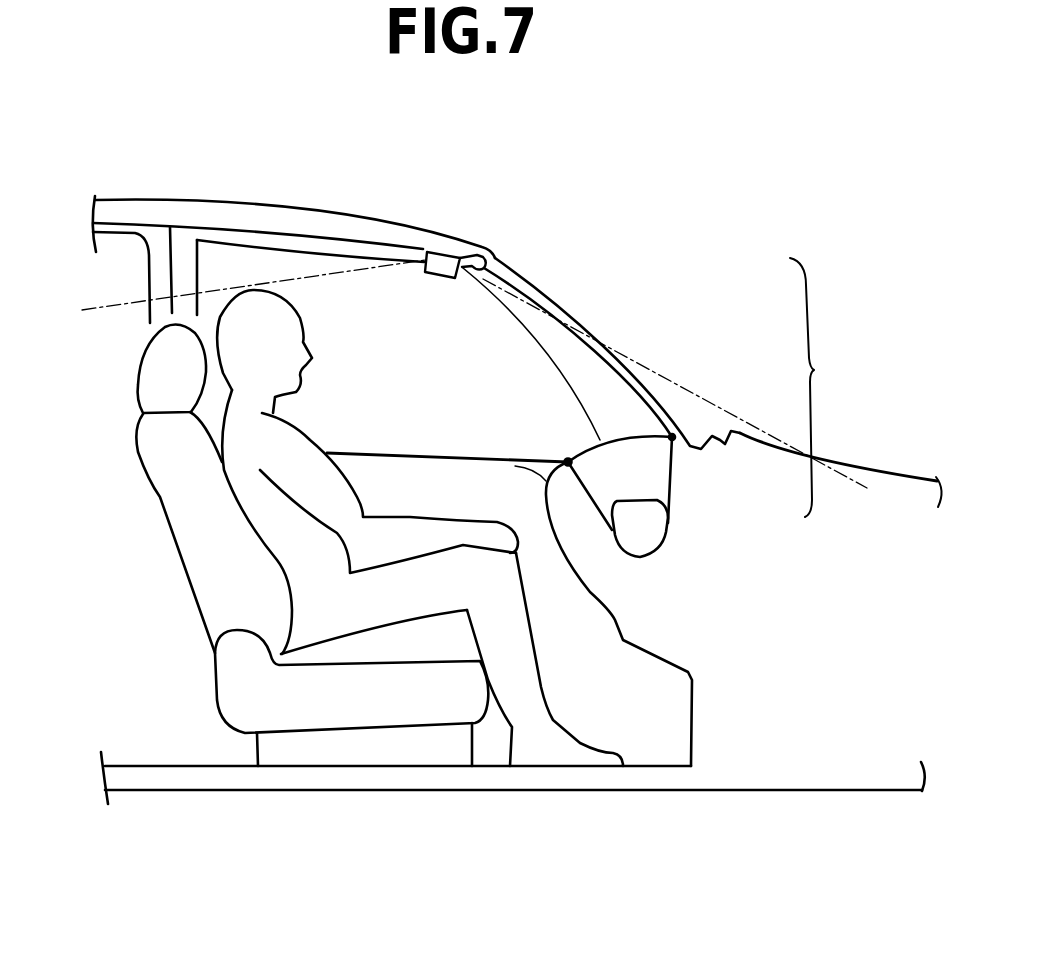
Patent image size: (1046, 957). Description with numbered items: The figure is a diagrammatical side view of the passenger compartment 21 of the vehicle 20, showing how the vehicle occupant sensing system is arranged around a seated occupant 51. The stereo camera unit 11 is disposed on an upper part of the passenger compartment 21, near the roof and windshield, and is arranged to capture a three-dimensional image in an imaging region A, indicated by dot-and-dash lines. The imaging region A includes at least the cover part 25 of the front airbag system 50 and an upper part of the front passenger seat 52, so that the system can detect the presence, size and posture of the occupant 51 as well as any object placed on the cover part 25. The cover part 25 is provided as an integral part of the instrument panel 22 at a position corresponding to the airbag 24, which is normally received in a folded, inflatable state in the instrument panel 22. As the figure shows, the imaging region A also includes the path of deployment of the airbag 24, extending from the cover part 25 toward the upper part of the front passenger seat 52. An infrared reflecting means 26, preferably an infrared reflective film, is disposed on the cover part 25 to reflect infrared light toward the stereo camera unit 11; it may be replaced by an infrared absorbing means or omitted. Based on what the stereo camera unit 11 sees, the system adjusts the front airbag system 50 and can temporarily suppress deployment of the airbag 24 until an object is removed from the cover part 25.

The stereo camera unit 11 is at (452, 241).
The vehicle 20 is at (128, 197).
The passenger compartment 21 is at (98, 347).
The instrument panel 22 is at (545, 466).
The airbag 24 is at (667, 489).
The cover part 25 is at (600, 442).
The infrared reflecting means 26 is at (674, 432).
The front airbag system 50 is at (833, 387).
The occupant 51 is at (272, 290).
The front passenger seat 52 is at (182, 475).
The imaging region A is at (520, 320).